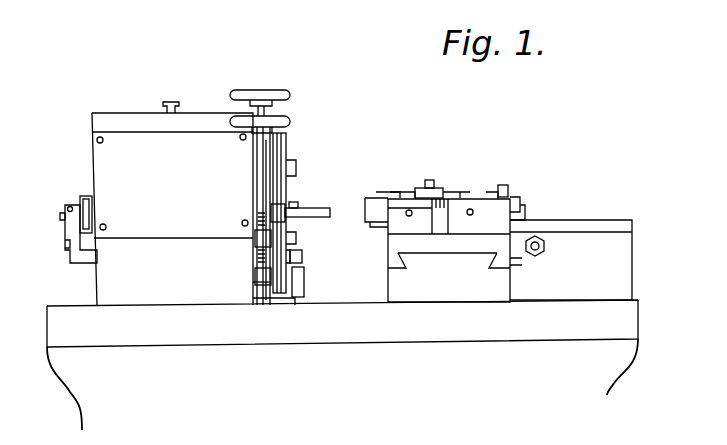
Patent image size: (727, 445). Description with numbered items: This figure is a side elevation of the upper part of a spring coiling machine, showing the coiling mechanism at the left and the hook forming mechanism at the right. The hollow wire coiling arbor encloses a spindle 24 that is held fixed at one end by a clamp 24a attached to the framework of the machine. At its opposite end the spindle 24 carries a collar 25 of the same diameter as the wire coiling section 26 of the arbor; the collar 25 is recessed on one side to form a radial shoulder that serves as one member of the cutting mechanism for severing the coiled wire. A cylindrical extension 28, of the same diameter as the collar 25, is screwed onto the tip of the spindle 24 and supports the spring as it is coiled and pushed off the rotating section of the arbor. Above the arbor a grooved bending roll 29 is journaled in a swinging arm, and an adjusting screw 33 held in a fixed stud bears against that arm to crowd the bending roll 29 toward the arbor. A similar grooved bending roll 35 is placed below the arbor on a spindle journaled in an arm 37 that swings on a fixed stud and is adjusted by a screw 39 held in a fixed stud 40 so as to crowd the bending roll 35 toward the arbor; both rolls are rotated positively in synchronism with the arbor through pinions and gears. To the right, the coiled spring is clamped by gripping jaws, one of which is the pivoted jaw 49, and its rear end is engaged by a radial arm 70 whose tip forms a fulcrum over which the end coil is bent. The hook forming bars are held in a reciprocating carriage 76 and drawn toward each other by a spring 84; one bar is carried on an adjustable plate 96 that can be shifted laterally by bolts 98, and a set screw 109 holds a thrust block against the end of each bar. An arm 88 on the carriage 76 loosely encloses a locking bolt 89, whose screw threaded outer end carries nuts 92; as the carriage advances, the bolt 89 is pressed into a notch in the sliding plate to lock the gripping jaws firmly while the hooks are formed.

The spindle 24 is at (81, 200).
The clamp 24a is at (70, 222).
The adjusting screw 33 is at (268, 111).
The grooved bending roll 29 is at (284, 144).
The screw 39 is at (265, 201).
The wire coiling section 26 is at (278, 212).
The cylindrical extension 28 is at (327, 213).
The collar 25 is at (295, 207).
The fixed stud 40 is at (262, 238).
The arm 37 is at (262, 272).
The grooved bending roll 35 is at (301, 283).
The reciprocating carriage 76 is at (444, 245).
The radial arm 70 is at (371, 200).
The jaw 49 is at (420, 190).
The spring 84 is at (445, 201).
The adjustable plate 96 is at (487, 208).
The bolts 98 is at (503, 197).
The set screw 109 is at (408, 215).
The nuts 92 is at (538, 240).
The arm 88 is at (518, 255).
The locking bolt 89 is at (547, 250).